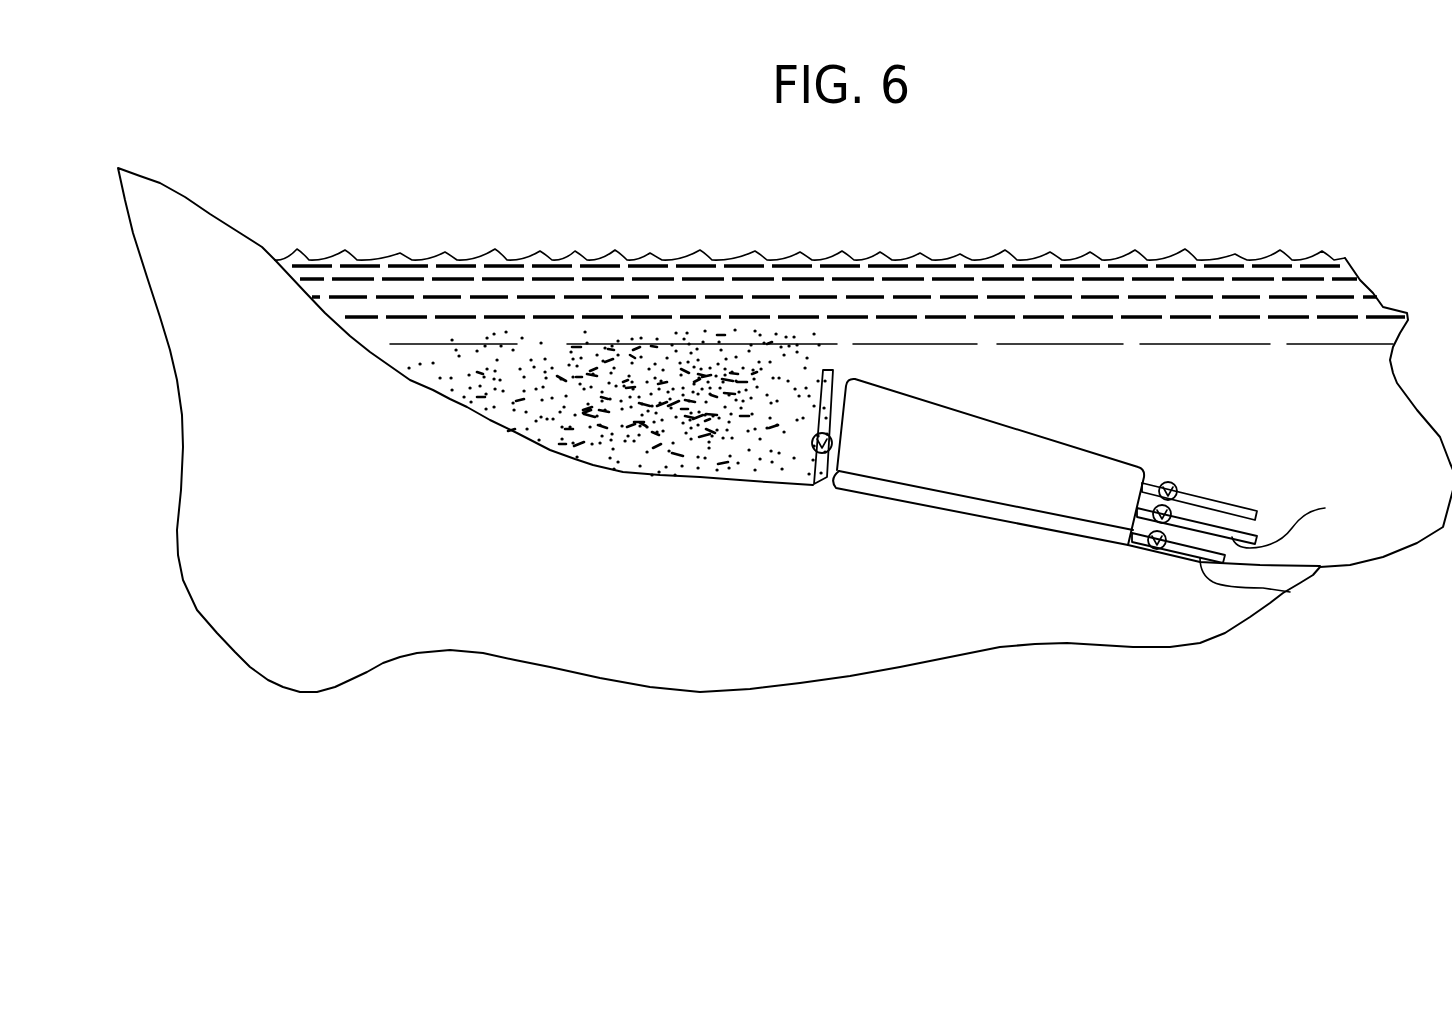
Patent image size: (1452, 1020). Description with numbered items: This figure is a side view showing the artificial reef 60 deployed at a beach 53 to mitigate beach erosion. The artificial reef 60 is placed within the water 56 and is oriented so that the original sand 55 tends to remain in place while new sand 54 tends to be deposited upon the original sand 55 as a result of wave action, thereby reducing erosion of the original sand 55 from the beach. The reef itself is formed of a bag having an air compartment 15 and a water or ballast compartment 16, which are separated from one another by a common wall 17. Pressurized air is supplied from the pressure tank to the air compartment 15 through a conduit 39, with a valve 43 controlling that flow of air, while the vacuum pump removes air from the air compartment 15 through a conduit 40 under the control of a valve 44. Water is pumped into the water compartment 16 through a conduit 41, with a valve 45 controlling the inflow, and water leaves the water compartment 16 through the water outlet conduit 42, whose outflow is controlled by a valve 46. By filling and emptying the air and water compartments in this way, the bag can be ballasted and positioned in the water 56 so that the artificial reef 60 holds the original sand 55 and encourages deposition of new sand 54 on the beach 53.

The air compartment 15 is at (943, 406).
The water compartment 16 is at (913, 492).
The common wall 17 is at (940, 489).
The conduit 39 is at (1258, 508).
The conduit 40 is at (1325, 508).
The conduit 41 is at (1290, 592).
The water outlet conduit 42 is at (838, 372).
The valve 43 is at (1167, 481).
The valve 44 is at (1170, 511).
The valve 45 is at (1148, 550).
The valve 46 is at (812, 443).
The beach 53 is at (160, 197).
The new sand 54 is at (530, 392).
The original sand 55 is at (590, 465).
The water 56 is at (1103, 257).
The artificial reef 60 is at (1033, 482).